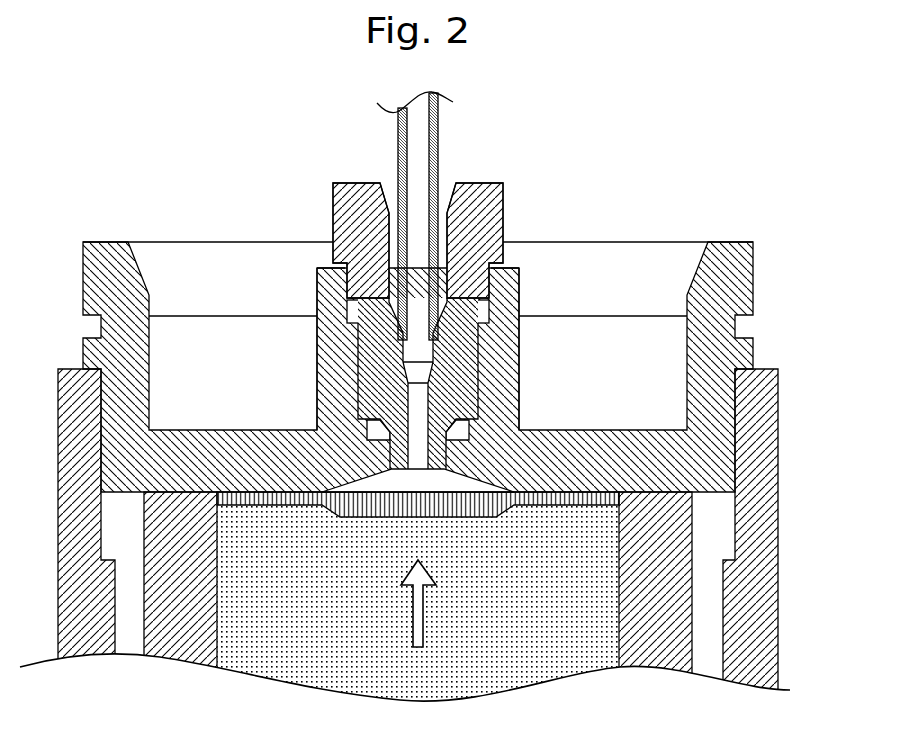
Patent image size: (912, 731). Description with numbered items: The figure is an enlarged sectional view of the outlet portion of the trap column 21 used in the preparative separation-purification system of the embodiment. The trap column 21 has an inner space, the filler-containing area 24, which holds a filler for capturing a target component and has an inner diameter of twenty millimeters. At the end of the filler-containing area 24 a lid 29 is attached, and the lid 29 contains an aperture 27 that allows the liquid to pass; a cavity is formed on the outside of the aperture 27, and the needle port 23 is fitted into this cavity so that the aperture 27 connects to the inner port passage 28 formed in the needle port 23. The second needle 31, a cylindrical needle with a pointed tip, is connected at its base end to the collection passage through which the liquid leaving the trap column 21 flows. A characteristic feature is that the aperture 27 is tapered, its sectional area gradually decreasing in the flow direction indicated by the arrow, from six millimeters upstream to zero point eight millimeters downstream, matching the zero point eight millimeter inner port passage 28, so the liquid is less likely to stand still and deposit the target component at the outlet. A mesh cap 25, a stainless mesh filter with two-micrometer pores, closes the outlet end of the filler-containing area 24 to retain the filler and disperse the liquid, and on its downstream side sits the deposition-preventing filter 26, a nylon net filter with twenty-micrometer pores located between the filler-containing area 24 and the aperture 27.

The trap column 21 is at (838, 370).
The needle port 23 is at (503, 214).
The filler-containing area 24 is at (590, 603).
The mesh cap 25 is at (575, 505).
The deposition-preventing filter 26 is at (432, 479).
The aperture 27 is at (388, 478).
The inner port passage 28 is at (418, 413).
The lid 29 is at (753, 283).
The second needle 31 is at (437, 152).